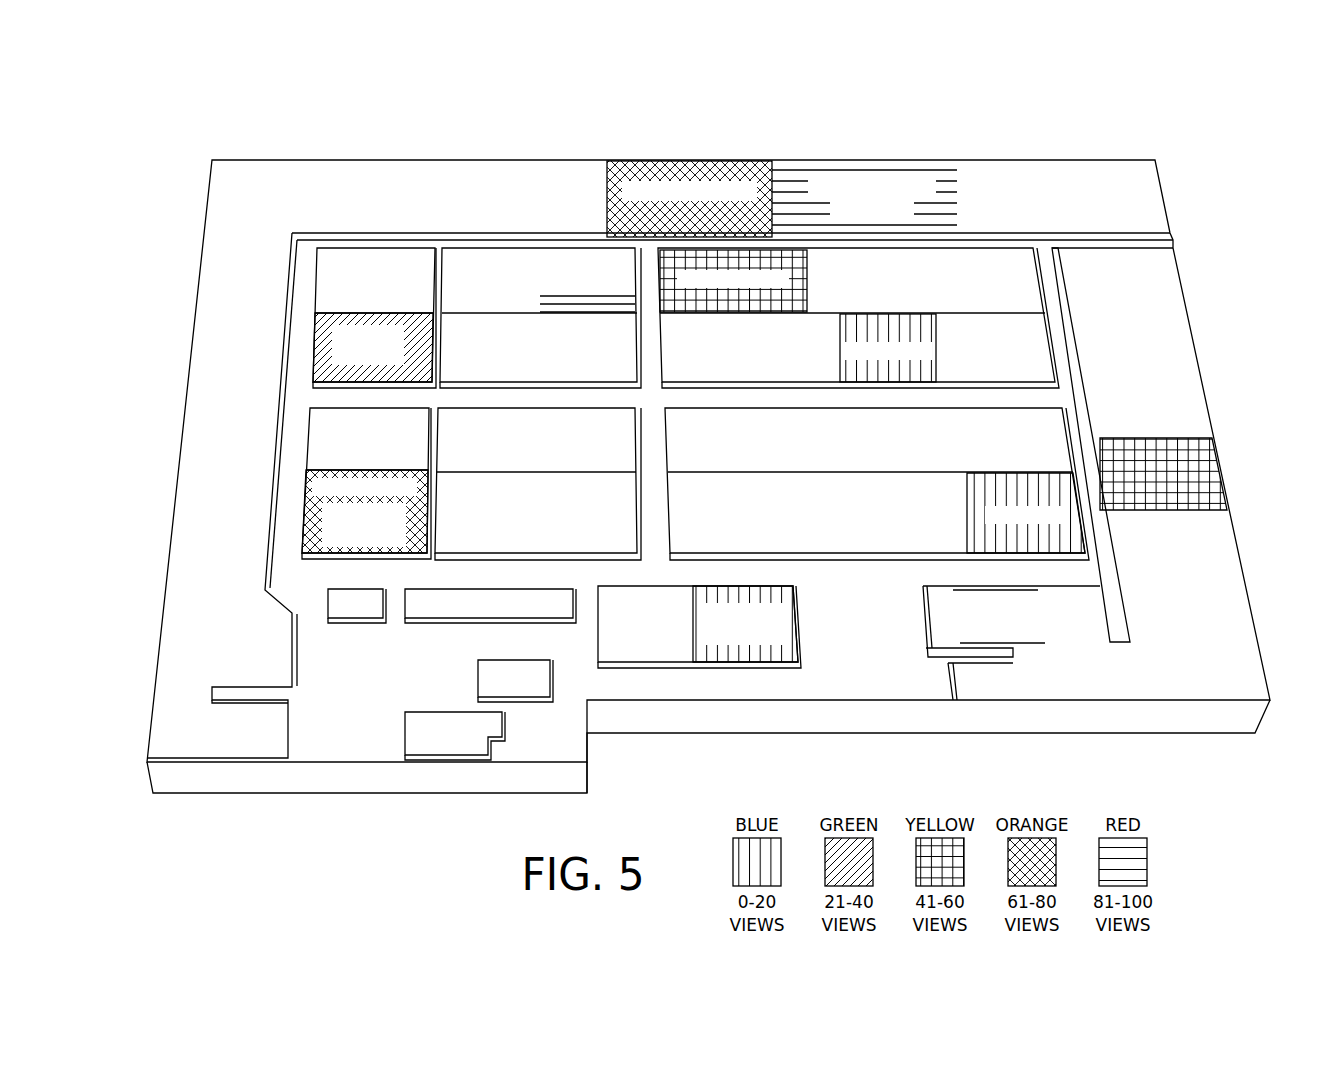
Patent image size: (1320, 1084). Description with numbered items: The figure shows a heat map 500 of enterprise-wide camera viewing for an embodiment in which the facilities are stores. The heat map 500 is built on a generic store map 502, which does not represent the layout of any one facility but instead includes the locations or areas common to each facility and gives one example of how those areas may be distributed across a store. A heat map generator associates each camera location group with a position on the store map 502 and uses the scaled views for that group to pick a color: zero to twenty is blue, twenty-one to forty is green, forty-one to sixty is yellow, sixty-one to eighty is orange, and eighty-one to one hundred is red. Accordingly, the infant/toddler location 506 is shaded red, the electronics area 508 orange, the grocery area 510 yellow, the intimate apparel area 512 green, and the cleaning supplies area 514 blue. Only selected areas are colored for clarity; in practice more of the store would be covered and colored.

The heat map 500 is at (702, 433).
The generic store map 502 is at (471, 192).
The infant/toddler location 506 is at (578, 292).
The electronics area 508 is at (683, 171).
The grocery area 510 is at (1175, 438).
The intimate apparel area 512 is at (327, 375).
The cleaning supplies area 514 is at (788, 653).